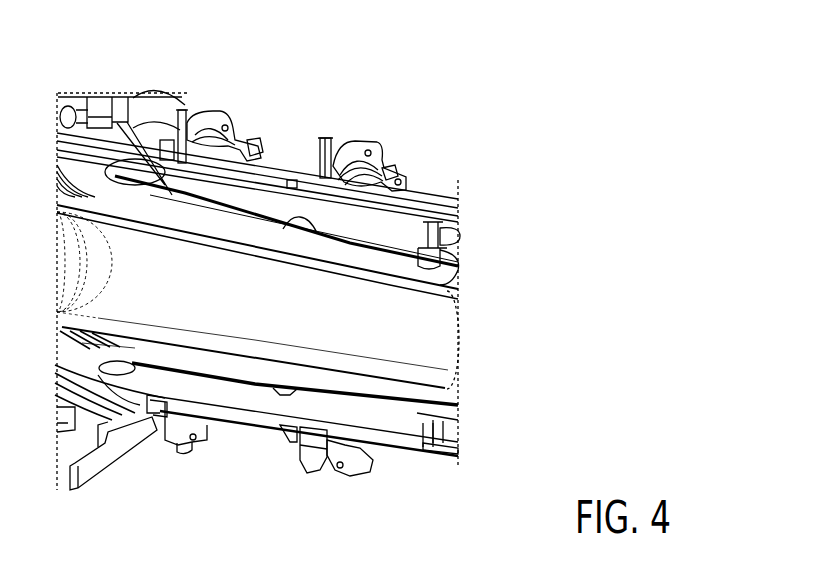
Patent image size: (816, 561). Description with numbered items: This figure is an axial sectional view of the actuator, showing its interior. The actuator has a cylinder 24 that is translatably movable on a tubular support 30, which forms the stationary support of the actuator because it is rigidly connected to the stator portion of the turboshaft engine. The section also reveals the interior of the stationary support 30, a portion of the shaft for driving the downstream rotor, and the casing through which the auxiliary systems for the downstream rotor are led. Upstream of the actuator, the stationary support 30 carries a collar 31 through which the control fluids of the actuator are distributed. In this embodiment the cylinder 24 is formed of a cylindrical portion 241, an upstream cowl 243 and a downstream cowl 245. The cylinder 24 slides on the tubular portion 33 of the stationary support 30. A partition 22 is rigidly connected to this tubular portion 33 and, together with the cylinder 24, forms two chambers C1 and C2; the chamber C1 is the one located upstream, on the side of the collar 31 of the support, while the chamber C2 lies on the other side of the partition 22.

The partition 22 is at (348, 166).
The cylinder 24 is at (290, 158).
The tubular support 30 is at (445, 203).
The collar 31 is at (152, 135).
The tubular portion 33 is at (452, 215).
The cylindrical portion 241 is at (278, 162).
The upstream cowl 243 is at (187, 130).
The downstream cowl 245 is at (333, 157).
The chamber C1 is at (246, 147).
The chamber C2 is at (388, 172).